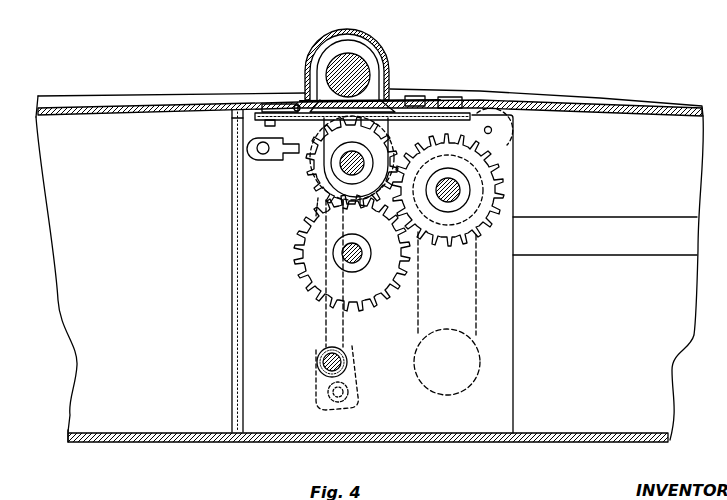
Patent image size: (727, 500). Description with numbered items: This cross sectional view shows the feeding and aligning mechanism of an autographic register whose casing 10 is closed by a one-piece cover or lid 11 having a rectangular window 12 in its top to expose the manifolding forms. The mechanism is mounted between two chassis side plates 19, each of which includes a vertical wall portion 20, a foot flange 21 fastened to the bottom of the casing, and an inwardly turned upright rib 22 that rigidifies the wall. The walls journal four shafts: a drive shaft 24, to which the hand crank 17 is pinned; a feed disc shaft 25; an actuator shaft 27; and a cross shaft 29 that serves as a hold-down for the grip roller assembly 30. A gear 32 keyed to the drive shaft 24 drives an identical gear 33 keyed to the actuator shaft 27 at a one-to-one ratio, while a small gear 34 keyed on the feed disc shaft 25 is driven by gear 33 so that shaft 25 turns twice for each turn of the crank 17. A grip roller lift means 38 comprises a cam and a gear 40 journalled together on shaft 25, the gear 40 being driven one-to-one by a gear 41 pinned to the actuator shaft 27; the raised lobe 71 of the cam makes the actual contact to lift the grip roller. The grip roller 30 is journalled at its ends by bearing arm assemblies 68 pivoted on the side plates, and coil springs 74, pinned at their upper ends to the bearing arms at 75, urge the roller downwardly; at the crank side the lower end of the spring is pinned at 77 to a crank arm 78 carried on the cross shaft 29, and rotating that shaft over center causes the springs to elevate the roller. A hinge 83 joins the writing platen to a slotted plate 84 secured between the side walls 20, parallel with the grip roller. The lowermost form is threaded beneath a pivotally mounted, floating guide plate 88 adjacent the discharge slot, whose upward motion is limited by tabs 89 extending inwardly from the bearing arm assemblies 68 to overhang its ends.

The autographic register casing 10 is at (80, 398).
The cover or lid portion 11 is at (692, 108).
The rectangular window 12 is at (179, 97).
The hand crank 17 is at (476, 348).
The chassis side plates 19 is at (252, 372).
The vertical wall portion 20 is at (498, 373).
The foot flange 21 is at (468, 433).
The upright rib 22 is at (238, 334).
The drive shaft 24 is at (452, 191).
The feed disc shaft 25 is at (346, 165).
The actuator shaft 27 is at (346, 251).
The cross shaft 29 is at (323, 362).
The grip roller assembly 30 is at (356, 73).
The gear 32 is at (496, 183).
The gear 33 is at (419, 283).
The small gear 34 is at (318, 199).
The grip roller lift means 38 is at (392, 146).
The gear 40 is at (326, 186).
The gear 41 is at (310, 260).
The bearing arm assemblies 68 is at (332, 50).
The raised lobe 71 is at (402, 96).
The coil springs 74 is at (327, 325).
The pin 75 is at (492, 130).
The pin 77 is at (350, 393).
The crank arm 78 is at (322, 405).
The hinge 83 is at (300, 104).
The plate 84 is at (256, 117).
The guide plate 88 is at (448, 97).
The tabs 89 is at (416, 96).